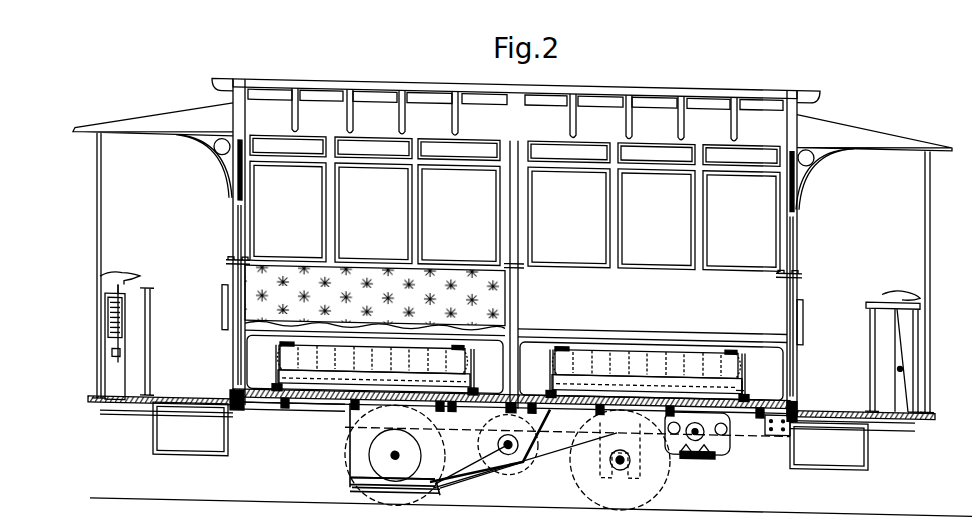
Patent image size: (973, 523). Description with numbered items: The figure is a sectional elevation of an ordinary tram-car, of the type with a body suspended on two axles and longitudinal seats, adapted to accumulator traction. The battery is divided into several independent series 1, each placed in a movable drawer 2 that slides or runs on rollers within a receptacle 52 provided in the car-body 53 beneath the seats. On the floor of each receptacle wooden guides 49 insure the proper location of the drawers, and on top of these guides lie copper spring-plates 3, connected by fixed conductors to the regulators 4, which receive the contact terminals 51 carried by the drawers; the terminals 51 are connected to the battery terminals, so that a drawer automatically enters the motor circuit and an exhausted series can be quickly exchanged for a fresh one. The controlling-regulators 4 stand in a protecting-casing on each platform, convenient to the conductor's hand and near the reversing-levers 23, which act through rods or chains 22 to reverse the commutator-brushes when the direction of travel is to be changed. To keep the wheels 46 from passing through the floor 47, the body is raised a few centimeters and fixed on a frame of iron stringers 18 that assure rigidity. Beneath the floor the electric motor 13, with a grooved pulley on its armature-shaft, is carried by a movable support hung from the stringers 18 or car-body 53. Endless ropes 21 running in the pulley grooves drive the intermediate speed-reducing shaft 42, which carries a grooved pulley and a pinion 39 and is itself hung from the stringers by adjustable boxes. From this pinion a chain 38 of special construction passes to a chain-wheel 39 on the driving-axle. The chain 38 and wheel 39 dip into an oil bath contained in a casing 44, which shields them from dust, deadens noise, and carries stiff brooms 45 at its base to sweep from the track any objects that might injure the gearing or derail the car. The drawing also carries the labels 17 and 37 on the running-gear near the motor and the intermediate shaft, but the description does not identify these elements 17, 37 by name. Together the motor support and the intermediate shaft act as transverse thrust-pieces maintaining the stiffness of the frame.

The independent series 1 is at (509, 364).
The movable drawer 2 is at (510, 381).
The spring-plates of copper 3 is at (743, 376).
The regulators 4 is at (119, 342).
The electric motor 13 is at (718, 432).
The electric motor 17 is at (642, 448).
The stringers 18 is at (289, 418).
The endless-rope cables 21 is at (494, 446).
The rods or chains 22 is at (316, 412).
The reversing-lever 23 is at (118, 404).
The gear wheel 37 is at (494, 438).
The chain 38 is at (452, 438).
The toothed pinion 39 is at (402, 455).
The intermediate shaft 42 is at (512, 438).
The oil-reservoir casing 44 is at (486, 465).
The brooms 45 is at (348, 485).
The wheels 46 is at (350, 463).
The floor 47 is at (494, 372).
The wooden guides 49 is at (511, 398).
The contact terminals 51 is at (280, 345).
The receptacle 52 is at (513, 367).
The car-body 53 is at (230, 390).